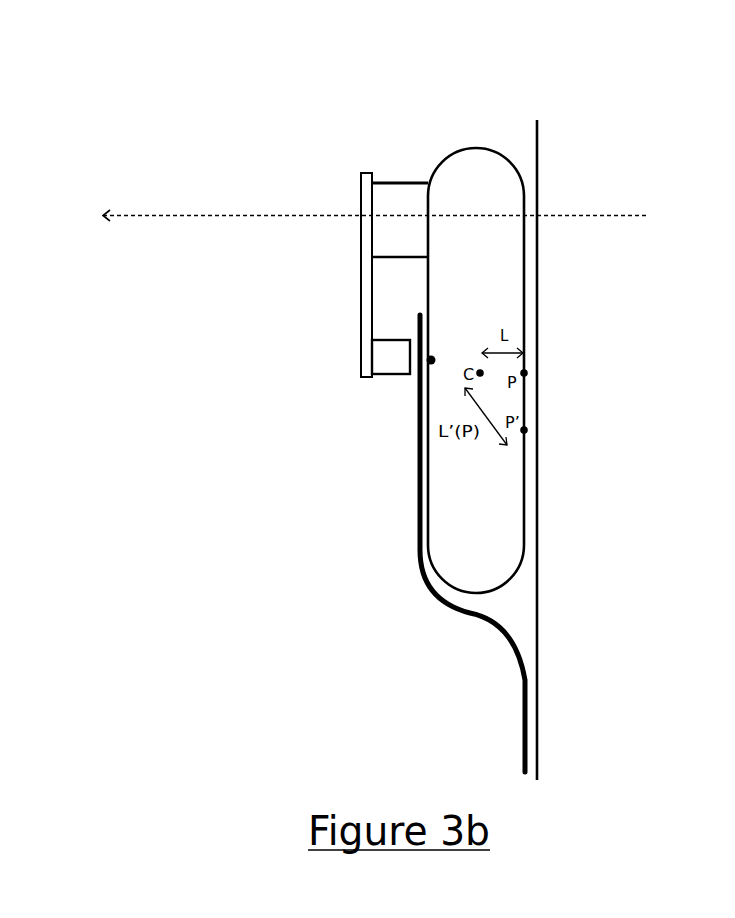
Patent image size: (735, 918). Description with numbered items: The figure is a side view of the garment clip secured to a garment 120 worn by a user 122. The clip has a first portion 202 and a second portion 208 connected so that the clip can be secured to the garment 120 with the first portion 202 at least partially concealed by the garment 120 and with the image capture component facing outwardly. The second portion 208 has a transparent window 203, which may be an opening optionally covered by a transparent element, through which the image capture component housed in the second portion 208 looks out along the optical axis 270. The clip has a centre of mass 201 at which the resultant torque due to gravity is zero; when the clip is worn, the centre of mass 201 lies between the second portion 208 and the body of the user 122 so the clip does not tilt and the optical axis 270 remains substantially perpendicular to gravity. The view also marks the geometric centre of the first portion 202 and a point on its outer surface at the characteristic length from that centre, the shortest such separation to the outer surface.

The first portion 202 is at (478, 150).
The transparent window 203 is at (360, 214).
The second portion 208 is at (360, 277).
The optical axis 270 is at (372, 202).
The centre of mass 201 is at (428, 364).
The garment 120 is at (417, 513).
The user 122 is at (537, 422).